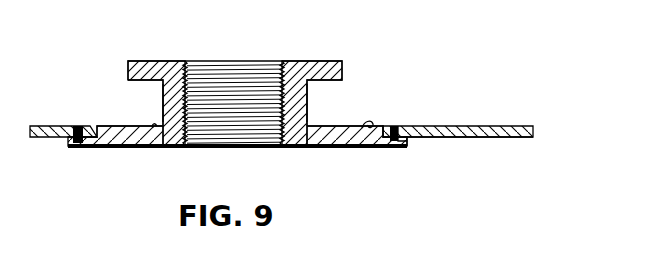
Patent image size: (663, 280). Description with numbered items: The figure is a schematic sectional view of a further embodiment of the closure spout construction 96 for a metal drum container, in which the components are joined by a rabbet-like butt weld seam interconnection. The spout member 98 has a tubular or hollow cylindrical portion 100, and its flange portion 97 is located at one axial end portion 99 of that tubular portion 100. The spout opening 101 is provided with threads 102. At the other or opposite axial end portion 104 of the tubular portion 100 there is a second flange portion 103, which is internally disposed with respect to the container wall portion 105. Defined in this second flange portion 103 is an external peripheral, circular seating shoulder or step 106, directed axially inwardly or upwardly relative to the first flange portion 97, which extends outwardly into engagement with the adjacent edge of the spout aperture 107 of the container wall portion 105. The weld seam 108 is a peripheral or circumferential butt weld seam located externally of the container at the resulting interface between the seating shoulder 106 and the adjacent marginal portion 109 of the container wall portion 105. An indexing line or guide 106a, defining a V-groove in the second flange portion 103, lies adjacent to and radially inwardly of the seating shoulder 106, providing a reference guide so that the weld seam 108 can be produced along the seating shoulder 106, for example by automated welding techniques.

The closure spout construction 96 is at (232, 73).
The flange portion 97 is at (312, 70).
The spout member 98 is at (353, 80).
The axial end portion 99 is at (162, 87).
The tubular portion 100 is at (171, 94).
The spout opening 101 is at (207, 72).
The threads 102 is at (267, 77).
The second flange portion 103 is at (323, 134).
The opposite axial end portion 104 is at (155, 130).
The container wall portion 105 is at (488, 124).
The seating shoulder 106 is at (88, 137).
The indexing line 106a is at (362, 128).
The spout aperture 107 is at (393, 128).
The weld seam 108 is at (398, 130).
The marginal portion 109 is at (456, 136).